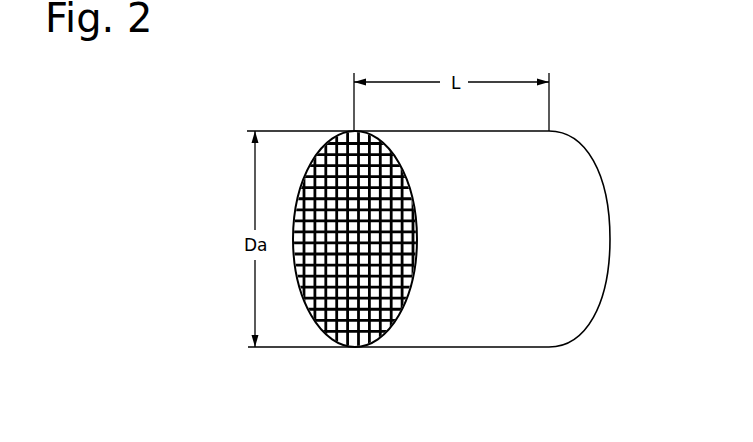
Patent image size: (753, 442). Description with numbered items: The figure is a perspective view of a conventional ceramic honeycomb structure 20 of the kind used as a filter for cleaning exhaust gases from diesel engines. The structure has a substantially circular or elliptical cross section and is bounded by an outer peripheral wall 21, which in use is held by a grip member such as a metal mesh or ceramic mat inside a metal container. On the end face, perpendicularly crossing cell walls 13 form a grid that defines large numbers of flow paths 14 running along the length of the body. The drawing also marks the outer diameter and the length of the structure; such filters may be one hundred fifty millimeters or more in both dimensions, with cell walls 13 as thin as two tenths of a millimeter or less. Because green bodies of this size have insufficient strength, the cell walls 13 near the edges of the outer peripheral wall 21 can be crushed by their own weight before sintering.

The ceramic honeycomb structure 20 is at (450, 231).
The outer peripheral wall 21 is at (493, 330).
The cell walls 13 is at (349, 333).
The flow paths 14 is at (375, 307).